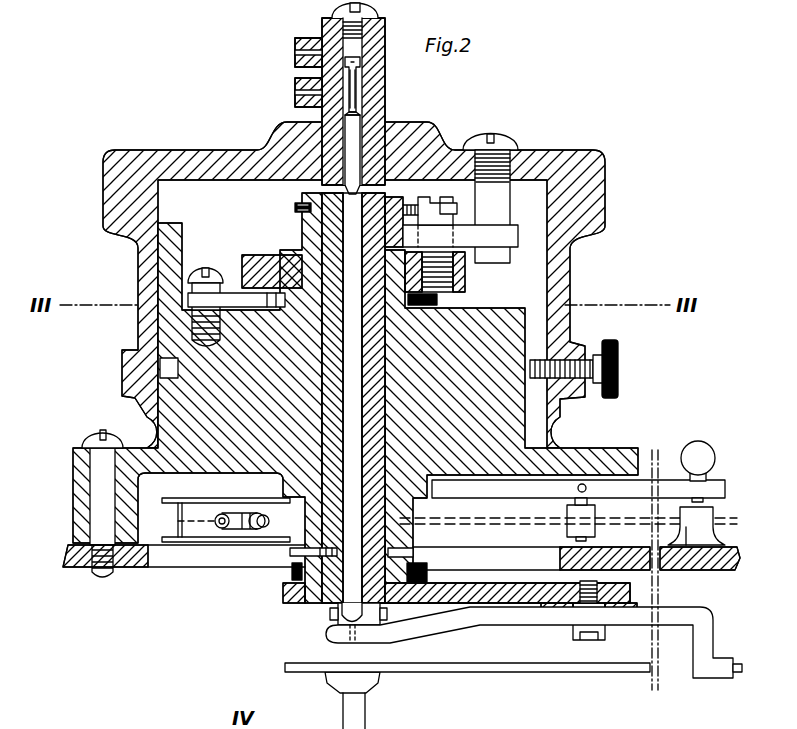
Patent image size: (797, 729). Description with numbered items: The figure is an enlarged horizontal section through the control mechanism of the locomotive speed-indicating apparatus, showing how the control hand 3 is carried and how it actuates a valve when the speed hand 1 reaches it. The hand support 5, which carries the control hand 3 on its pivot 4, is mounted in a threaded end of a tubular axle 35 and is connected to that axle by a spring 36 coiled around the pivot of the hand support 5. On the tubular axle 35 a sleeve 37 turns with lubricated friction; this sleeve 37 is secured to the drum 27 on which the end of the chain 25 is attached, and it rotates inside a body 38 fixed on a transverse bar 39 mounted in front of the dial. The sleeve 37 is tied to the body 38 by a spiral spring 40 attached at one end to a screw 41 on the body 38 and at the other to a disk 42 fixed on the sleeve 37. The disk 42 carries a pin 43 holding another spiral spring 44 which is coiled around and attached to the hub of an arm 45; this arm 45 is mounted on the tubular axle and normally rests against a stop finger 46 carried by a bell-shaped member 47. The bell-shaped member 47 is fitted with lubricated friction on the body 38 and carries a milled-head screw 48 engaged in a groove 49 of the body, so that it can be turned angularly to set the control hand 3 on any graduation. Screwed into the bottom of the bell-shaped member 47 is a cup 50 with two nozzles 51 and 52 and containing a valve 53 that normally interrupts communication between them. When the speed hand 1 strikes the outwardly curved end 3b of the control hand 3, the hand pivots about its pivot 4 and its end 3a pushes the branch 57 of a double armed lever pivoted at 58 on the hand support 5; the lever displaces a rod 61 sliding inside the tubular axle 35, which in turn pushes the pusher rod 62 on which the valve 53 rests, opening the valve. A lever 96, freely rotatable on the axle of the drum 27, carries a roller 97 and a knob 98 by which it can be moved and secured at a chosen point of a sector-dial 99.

The speed-hand 1 is at (432, 665).
The control hand 3 is at (683, 613).
The end of hand 3a is at (410, 640).
The outwardly curved end of hand 3b is at (713, 665).
The pivot 4 is at (580, 640).
The hand support 5 is at (500, 595).
The chain 25 is at (690, 530).
The drum 27 is at (210, 535).
The tubular axle 35 is at (333, 443).
The spring 36 is at (292, 573).
The sleeve 37 is at (400, 344).
The body 38 is at (500, 433).
The transverse bar 39 is at (133, 568).
The spiral spring 40 is at (198, 300).
The screw 41 is at (200, 275).
The disk 42 is at (253, 268).
The pin 43 is at (435, 222).
The spiral spring 44 is at (297, 207).
The arm 45 is at (503, 245).
The stop finger 46 is at (500, 198).
The bell-shaped member 47 is at (580, 222).
The milled-head screw 48 is at (618, 375).
The groove 49 is at (170, 370).
The cup 50 is at (323, 30).
The tubular extension (nozzle) 51 is at (300, 52).
The tubular extension (nozzle) 52 is at (298, 92).
The valve 53 is at (358, 70).
The branch of double armed lever 57 is at (353, 622).
The pivot of lever 58 is at (330, 612).
The rod 61 is at (353, 577).
The pusher rod 62 is at (352, 152).
The lever 96 is at (718, 490).
The roller 97 is at (595, 510).
The knob 98 is at (705, 452).
The sector-dial 99 is at (714, 511).